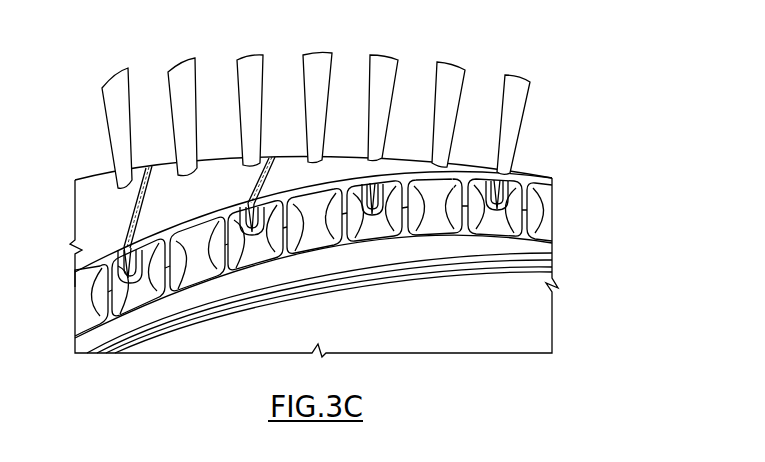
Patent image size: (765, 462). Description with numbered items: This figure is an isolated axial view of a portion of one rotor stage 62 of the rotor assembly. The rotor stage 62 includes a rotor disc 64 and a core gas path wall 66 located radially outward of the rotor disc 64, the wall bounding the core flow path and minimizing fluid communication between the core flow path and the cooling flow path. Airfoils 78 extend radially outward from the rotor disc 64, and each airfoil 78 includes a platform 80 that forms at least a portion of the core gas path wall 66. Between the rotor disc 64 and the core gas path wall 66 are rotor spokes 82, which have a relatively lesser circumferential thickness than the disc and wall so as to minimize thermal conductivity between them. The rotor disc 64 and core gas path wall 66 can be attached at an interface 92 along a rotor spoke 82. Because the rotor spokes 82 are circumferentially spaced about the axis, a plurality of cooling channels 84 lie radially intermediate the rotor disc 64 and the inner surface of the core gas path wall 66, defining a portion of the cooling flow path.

The rotor stage 62 is at (580, 74).
The rotor disc 64 is at (556, 255).
The core gas path wall 66 is at (540, 173).
The airfoil 78 is at (315, 52).
The platform 80 is at (513, 173).
The rotor spoke 82 is at (548, 230).
The cooling channel 84 is at (323, 192).
The interface 92 is at (397, 210).